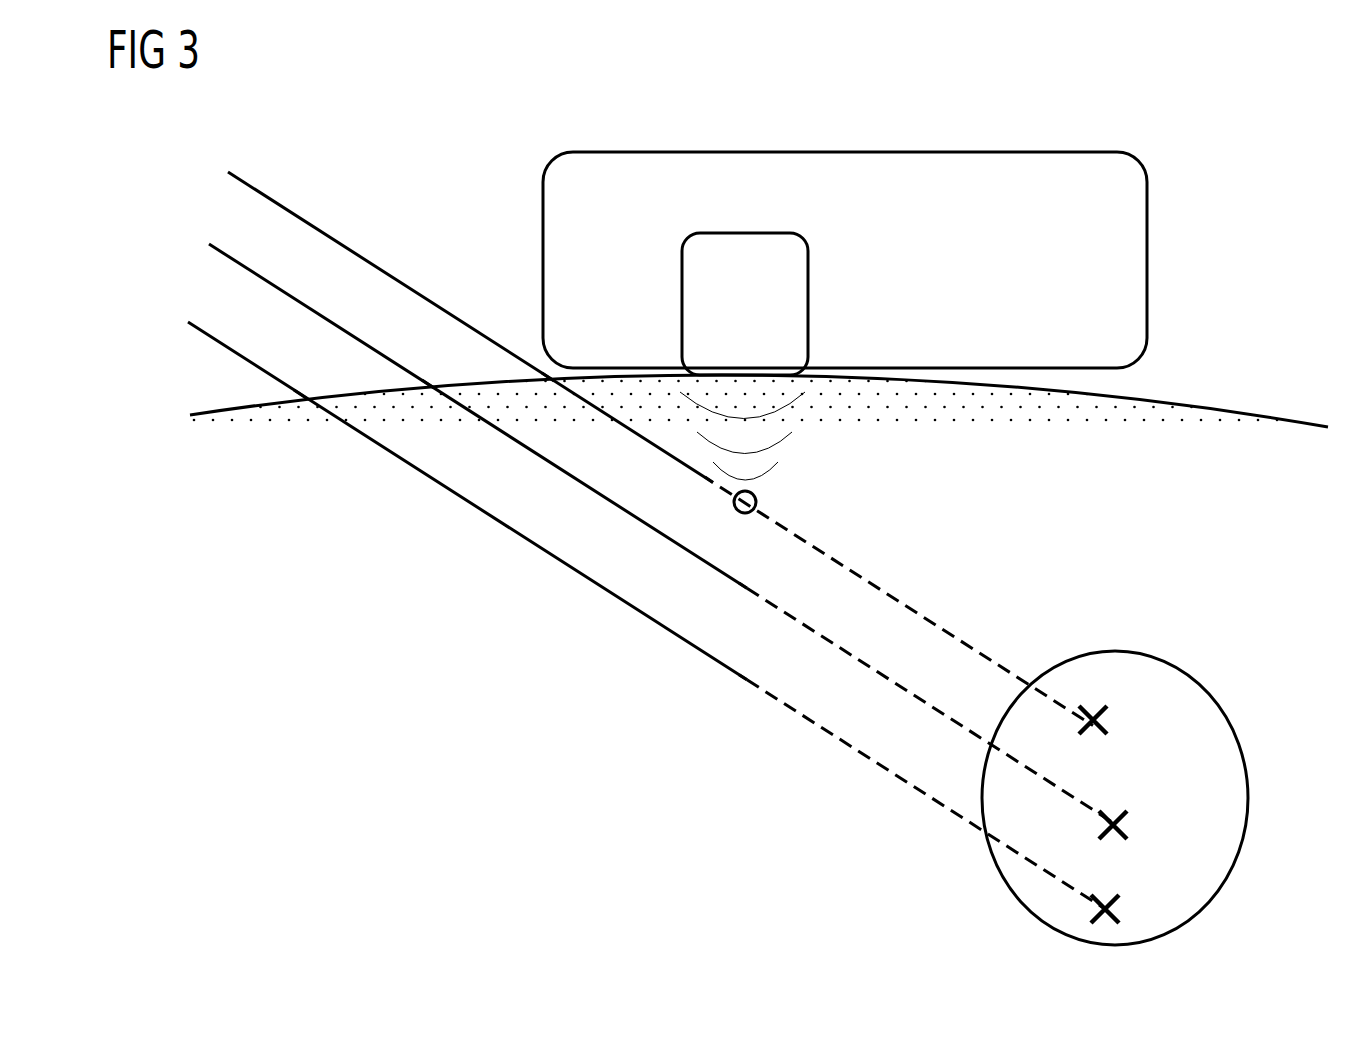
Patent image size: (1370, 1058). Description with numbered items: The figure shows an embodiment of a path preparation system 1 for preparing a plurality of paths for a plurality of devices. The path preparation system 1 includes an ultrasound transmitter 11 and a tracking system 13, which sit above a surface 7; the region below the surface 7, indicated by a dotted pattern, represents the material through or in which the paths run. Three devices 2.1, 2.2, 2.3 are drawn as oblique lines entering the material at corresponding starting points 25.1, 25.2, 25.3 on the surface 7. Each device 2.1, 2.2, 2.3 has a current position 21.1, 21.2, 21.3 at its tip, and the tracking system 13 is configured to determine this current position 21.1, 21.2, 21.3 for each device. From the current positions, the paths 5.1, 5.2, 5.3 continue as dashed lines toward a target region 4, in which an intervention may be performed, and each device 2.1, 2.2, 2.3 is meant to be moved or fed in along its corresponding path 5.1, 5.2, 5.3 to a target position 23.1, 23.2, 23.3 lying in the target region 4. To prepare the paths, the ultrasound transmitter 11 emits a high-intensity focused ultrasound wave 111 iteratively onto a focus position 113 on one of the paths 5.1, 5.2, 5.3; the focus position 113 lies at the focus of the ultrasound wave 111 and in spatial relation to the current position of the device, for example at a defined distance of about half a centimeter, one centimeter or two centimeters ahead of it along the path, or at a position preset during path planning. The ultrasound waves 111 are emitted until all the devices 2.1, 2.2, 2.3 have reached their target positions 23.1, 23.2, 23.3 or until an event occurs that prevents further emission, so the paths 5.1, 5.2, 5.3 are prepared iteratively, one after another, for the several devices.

The path preparation system 1 is at (495, 122).
The ultrasound transmitter 11 is at (752, 250).
The tracking system 13 is at (908, 152).
The surface 7 is at (1283, 405).
The high-intensity focused ultrasound wave 111 is at (785, 433).
The focus position 113 is at (757, 500).
The first device 2.1 is at (293, 212).
The second device 2.2 is at (253, 270).
The third device 2.3 is at (195, 328).
The first starting point 25.1 is at (548, 378).
The second starting point 25.2 is at (426, 384).
The third starting point 25.3 is at (298, 393).
The first current position 21.1 is at (712, 490).
The second current position 21.2 is at (745, 595).
The third current position 21.3 is at (748, 682).
The first path 5.1 is at (945, 628).
The second path 5.2 is at (898, 684).
The third path 5.3 is at (850, 748).
The target region 4 is at (1118, 652).
The first target position 23.1 is at (1100, 720).
The second target position 23.2 is at (1120, 826).
The third target position 23.3 is at (1112, 908).